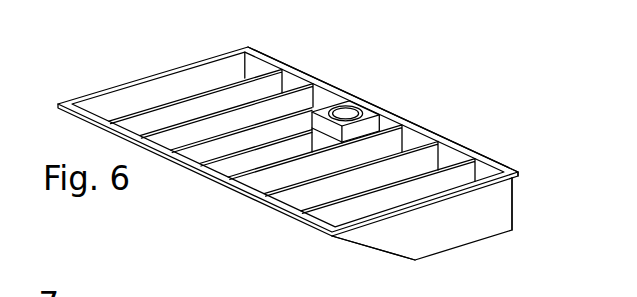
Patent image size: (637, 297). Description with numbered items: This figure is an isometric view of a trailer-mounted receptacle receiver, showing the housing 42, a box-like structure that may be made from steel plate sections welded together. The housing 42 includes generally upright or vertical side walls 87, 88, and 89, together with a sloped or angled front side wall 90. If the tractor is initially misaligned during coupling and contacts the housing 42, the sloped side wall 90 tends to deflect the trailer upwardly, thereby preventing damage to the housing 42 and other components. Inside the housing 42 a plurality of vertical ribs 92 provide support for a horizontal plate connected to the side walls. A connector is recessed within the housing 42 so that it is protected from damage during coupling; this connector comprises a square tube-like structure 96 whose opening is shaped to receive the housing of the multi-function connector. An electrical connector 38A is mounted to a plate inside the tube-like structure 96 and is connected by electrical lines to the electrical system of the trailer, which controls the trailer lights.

The side wall 87 is at (168, 72).
The housing 42 is at (420, 126).
The side wall 88 is at (513, 197).
The side wall 89 is at (438, 235).
The sloped front side wall 90 is at (372, 246).
The vertical ribs 92 is at (287, 143).
The square tube-like structure 96 is at (378, 113).
The electrical connector 38A is at (356, 110).